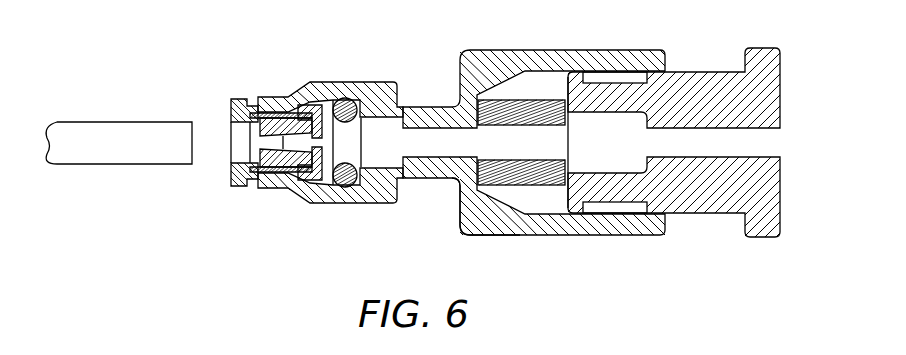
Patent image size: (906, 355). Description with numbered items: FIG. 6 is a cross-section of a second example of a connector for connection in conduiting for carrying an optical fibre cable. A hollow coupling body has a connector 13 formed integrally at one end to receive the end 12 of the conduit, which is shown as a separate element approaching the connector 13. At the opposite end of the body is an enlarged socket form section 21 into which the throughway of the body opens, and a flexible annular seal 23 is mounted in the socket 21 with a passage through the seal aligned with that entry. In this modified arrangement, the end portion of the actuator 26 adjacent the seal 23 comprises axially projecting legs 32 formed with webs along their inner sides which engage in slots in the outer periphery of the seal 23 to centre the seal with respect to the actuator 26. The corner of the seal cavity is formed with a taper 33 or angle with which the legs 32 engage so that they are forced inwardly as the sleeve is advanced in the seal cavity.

The conduit end 12 is at (117, 122).
The connector 13 is at (337, 81).
The socket form section 21 is at (465, 54).
The flexible annular seal 23 is at (522, 177).
The actuator 26 is at (725, 84).
The axially projecting legs 32 is at (612, 101).
The taper 33 is at (476, 222).